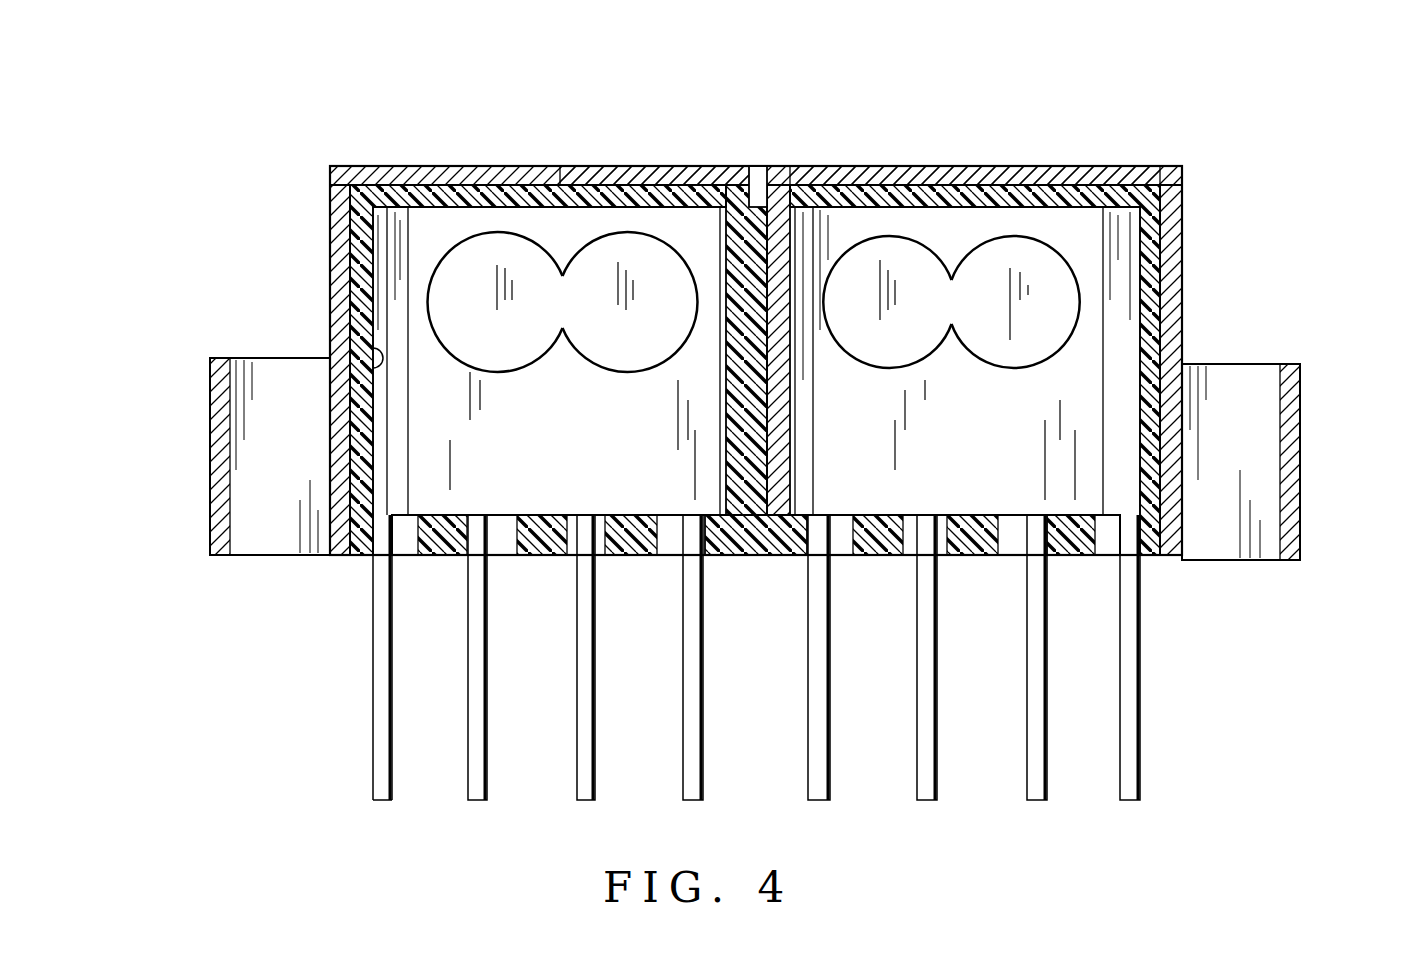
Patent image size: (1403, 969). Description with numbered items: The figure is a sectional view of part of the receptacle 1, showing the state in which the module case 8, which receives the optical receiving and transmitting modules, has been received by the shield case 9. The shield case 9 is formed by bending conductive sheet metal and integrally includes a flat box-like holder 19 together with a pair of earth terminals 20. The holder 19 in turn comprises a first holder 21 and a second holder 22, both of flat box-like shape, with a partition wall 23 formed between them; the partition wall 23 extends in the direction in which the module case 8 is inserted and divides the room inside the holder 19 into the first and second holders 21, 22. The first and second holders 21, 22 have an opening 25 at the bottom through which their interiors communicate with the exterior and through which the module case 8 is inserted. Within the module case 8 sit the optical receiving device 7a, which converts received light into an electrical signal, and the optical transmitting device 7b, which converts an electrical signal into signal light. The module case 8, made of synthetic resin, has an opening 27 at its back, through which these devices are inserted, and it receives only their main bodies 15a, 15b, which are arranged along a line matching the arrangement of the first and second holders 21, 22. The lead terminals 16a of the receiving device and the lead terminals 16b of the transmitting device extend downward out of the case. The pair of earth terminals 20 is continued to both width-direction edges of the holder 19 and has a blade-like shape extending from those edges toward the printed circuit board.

The receptacle 1 is at (398, 143).
The optical receiving device 7a is at (585, 166).
The optical transmitting device 7b is at (945, 166).
The module case 8 is at (658, 166).
The shield case 9 is at (758, 158).
The main body 15a is at (455, 300).
The main body 15b is at (1047, 422).
The lead terminals 16a is at (470, 765).
The lead terminals 16b is at (918, 768).
The holder 19 is at (738, 166).
The earth terminals 20 is at (215, 470).
The first holder 21 is at (518, 166).
The second holder 22 is at (985, 166).
The partition wall 23 is at (758, 262).
The opening 25 is at (360, 556).
The opening 27 is at (385, 357).